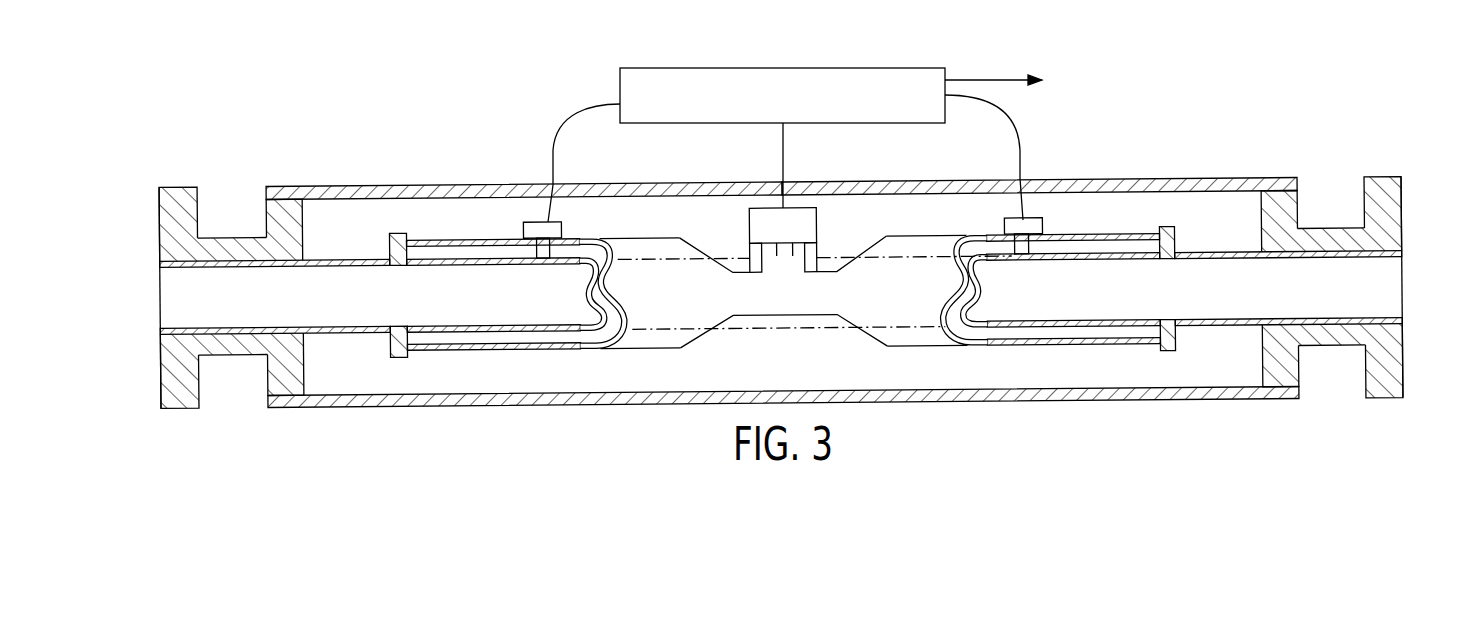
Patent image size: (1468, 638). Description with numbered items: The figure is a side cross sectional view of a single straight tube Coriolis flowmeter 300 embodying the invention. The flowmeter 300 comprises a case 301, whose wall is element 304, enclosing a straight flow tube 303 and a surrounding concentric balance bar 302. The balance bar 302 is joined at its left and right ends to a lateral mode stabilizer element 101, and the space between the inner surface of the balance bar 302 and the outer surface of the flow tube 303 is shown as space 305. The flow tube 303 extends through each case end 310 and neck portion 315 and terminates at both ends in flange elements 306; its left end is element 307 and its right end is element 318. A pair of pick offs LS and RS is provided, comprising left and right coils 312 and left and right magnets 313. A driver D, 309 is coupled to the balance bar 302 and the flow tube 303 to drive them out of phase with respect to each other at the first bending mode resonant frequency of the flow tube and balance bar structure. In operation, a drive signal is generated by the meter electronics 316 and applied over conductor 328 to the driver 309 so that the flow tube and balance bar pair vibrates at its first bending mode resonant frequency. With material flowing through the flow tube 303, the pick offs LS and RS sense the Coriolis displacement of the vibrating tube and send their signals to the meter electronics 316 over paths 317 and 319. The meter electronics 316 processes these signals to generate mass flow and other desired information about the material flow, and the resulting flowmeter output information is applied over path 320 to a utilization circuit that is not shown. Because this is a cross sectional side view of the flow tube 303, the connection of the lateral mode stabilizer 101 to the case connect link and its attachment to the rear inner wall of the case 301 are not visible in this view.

The lateral mode stabilizer element 101 is at (390, 253).
The straight tube Coriolis flowmeter 300 is at (672, 166).
The case 301 is at (497, 184).
The balance bar 302 is at (684, 293).
The flow tube 303 is at (757, 323).
The case wall 304 is at (1150, 179).
The space between balance bar and flow tube 305 is at (457, 335).
The flange elements 306 is at (185, 382).
The left end of flow tube 307 is at (203, 297).
The driver 309 is at (800, 240).
The case end 310 is at (268, 374).
The coils 312 is at (565, 227).
The magnets 313 is at (545, 254).
The neck portion 315 is at (228, 237).
The meter electronics 316 is at (810, 67).
The path 317 is at (572, 120).
The right end of flow tube 318 is at (1403, 286).
The path 319 is at (1028, 133).
The path 320 is at (1002, 78).
The conductor 328 is at (784, 148).
The left pick off LS is at (527, 232).
The right pick off RS is at (1005, 223).
The driver D is at (808, 220).